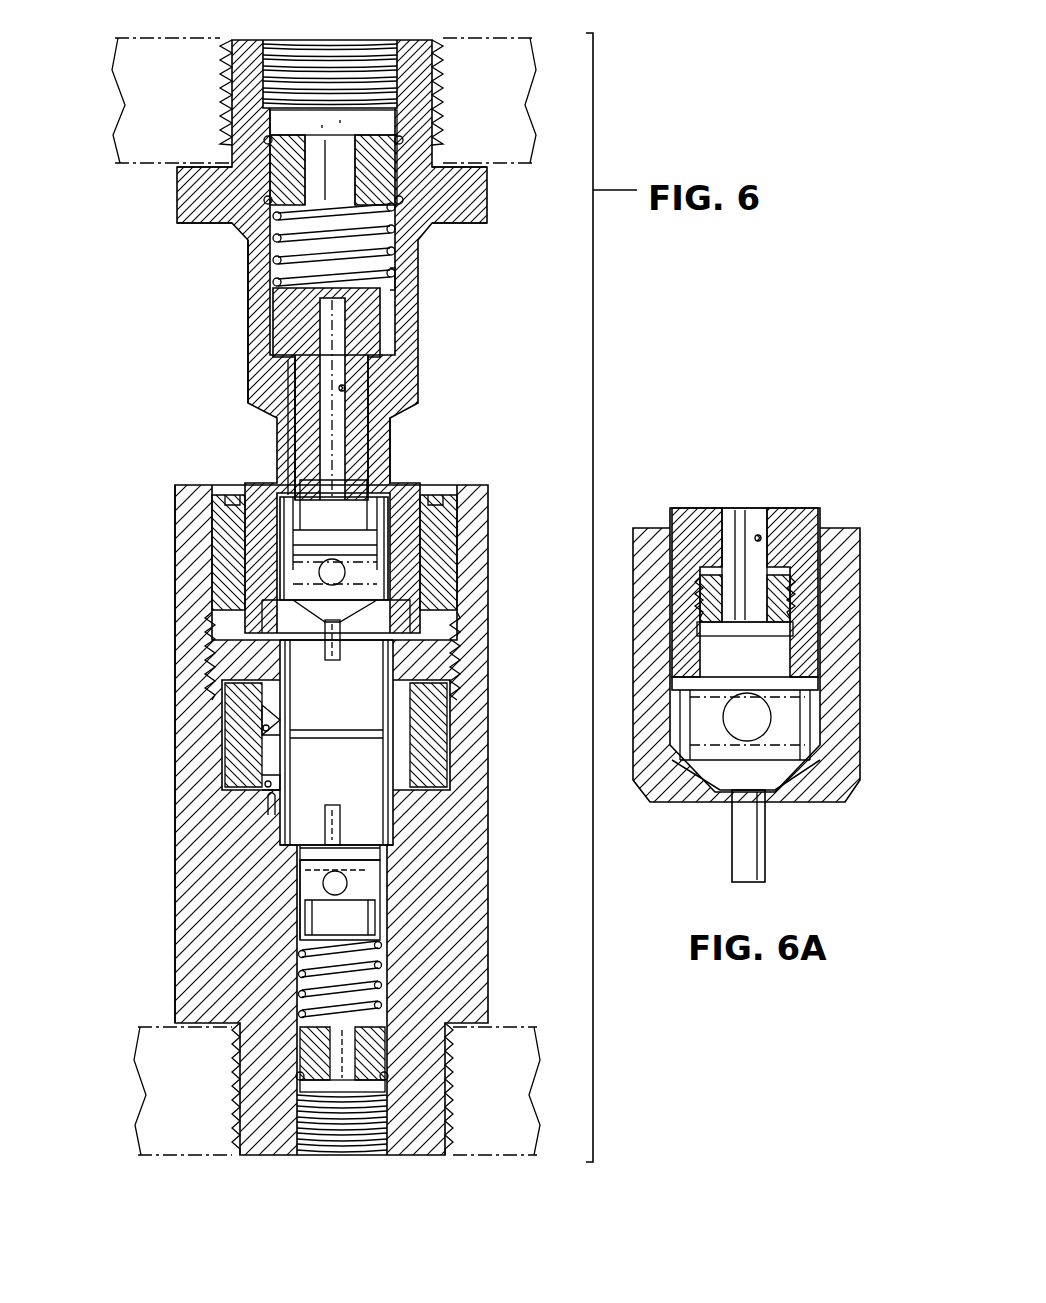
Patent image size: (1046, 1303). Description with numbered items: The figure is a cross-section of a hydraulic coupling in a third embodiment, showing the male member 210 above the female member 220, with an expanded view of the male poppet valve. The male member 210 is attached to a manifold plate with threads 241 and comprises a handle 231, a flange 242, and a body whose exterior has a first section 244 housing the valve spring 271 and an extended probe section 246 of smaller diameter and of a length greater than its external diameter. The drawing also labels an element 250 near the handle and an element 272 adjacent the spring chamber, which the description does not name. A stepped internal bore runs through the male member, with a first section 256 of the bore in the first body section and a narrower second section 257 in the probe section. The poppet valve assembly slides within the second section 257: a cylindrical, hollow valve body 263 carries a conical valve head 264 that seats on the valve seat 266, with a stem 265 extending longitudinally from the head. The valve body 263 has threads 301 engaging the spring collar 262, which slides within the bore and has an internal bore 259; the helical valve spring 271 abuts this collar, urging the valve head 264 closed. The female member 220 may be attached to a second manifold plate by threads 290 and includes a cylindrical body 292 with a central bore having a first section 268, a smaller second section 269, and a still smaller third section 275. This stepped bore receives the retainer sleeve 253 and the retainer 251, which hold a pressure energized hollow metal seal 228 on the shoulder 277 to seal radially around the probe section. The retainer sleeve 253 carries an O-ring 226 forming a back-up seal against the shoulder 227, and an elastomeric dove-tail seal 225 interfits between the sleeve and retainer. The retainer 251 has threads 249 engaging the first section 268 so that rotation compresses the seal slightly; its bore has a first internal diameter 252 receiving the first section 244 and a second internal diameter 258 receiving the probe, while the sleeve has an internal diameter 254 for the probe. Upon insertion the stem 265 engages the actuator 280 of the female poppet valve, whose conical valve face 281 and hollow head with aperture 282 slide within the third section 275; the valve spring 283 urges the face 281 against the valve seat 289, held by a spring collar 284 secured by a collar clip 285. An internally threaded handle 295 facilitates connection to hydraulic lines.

In FIG. 6, the male member 210 is at (222, 292).
In FIG. 6, the female member 220 is at (168, 657).
In FIG. 6, the handle 231 is at (228, 70).
In FIG. 6, the internal threads 250 is at (268, 95).
In FIG. 6, the threads 241 is at (226, 128).
In FIG. 6, the flange 242 is at (180, 195).
In FIG. 6, the first section 244 is at (250, 350).
In FIG. 6, the extended probe section 246 is at (392, 462).
In FIG. 6, the plug 272 is at (375, 175).
In FIG. 6, the valve spring 271 is at (398, 236).
In FIG. 6, the first section of the bore 256 is at (394, 278).
In FIG. 6, the spring collar 262 is at (302, 422).
In FIG. 6A, the spring collar 262 is at (792, 556).
In FIG. 6, the second section of the bore 257 is at (292, 455).
In FIG. 6, the internal bore 259 is at (348, 388).
In FIG. 6A, the internal bore 259 is at (762, 538).
In FIG. 6, the first internal diameter 252 is at (226, 521).
In FIG. 6, the threads 249 is at (208, 630).
In FIG. 6, the retainer 251 is at (218, 690).
In FIG. 6, the retainer sleeve 253 is at (240, 722).
In FIG. 6, the second section 269 is at (425, 760).
In FIG. 6, the internal diameter 254 is at (248, 770).
In FIG. 6, the O-ring 226 is at (258, 800).
In FIG. 6, the hollow metal seal 228 is at (266, 815).
In FIG. 6, the shoulder 227 is at (395, 805).
In FIG. 6, the second internal diameter 258 is at (398, 700).
In FIG. 6, the dove-tail seal 225 is at (395, 730).
In FIG. 6, the actuator 280 is at (342, 825).
In FIG. 6, the shoulder 277 is at (290, 845).
In FIG. 6, the conical valve face 281 is at (346, 883).
In FIG. 6, the aperture 282 is at (372, 905).
In FIG. 6, the valve seat 289 is at (302, 895).
In FIG. 6, the valve spring 283 is at (375, 960).
In FIG. 6, the third section 275 is at (372, 995).
In FIG. 6, the cylindrical body 292 is at (188, 970).
In FIG. 6, the collar clip 285 is at (302, 1078).
In FIG. 6, the spring collar 284 is at (296, 1062).
In FIG. 6, the internally threaded handle 295 is at (298, 1108).
In FIG. 6, the threads 290 is at (298, 1136).
In FIG. 6, the valve body 263 is at (300, 522).
In FIG. 6A, the valve body 263 is at (795, 648).
In FIG. 6, the first section 268 is at (380, 538).
In FIG. 6, the valve seat 266 is at (348, 580).
In FIG. 6A, the valve seat 266 is at (812, 748).
In FIG. 6, the valve head 264 is at (400, 606).
In FIG. 6A, the valve head 264 is at (790, 790).
In FIG. 6, the stem 265 is at (344, 646).
In FIG. 6A, the stem 265 is at (762, 832).
In FIG. 6A, the threads 301 is at (800, 596).